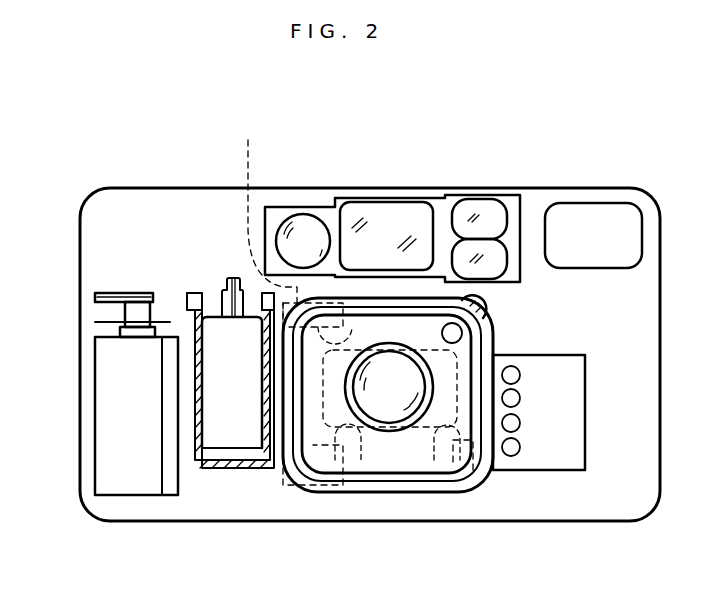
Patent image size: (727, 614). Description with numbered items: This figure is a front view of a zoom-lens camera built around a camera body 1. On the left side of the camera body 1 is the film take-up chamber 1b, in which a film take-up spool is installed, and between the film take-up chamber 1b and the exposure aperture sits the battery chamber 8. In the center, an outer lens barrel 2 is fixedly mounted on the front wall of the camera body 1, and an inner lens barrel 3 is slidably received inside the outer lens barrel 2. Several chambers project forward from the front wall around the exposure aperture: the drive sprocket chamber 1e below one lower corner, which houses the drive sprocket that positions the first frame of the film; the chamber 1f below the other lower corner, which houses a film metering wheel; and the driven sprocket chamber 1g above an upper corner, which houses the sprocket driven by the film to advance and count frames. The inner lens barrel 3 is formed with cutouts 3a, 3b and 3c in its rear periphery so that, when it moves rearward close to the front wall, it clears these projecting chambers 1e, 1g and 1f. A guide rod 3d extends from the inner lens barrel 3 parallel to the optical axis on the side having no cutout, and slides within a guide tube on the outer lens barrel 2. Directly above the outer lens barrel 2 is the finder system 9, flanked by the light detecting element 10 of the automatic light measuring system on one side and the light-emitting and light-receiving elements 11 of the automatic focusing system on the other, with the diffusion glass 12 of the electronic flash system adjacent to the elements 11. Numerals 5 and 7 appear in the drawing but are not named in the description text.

The camera body 1 is at (193, 180).
The film take-up chamber 1b is at (217, 465).
The drive sprocket chamber 1e is at (290, 487).
The chamber 1f is at (472, 468).
The driven sprocket chamber 1g is at (288, 221).
The outer lens barrel 2 is at (414, 488).
The inner lens barrel 3 is at (382, 474).
The cutout 3a is at (352, 462).
The cutout 3b is at (362, 333).
The cutout 3c is at (440, 458).
The guide rod 3d is at (485, 308).
The photographing lens 5 is at (412, 373).
The battery 7 is at (240, 445).
The battery chamber 8 is at (107, 450).
The finder system 9 is at (393, 212).
The light detecting element 10 is at (303, 222).
The light-emitting and light-receiving elements 11 is at (478, 210).
The diffusion glass 12 is at (600, 212).